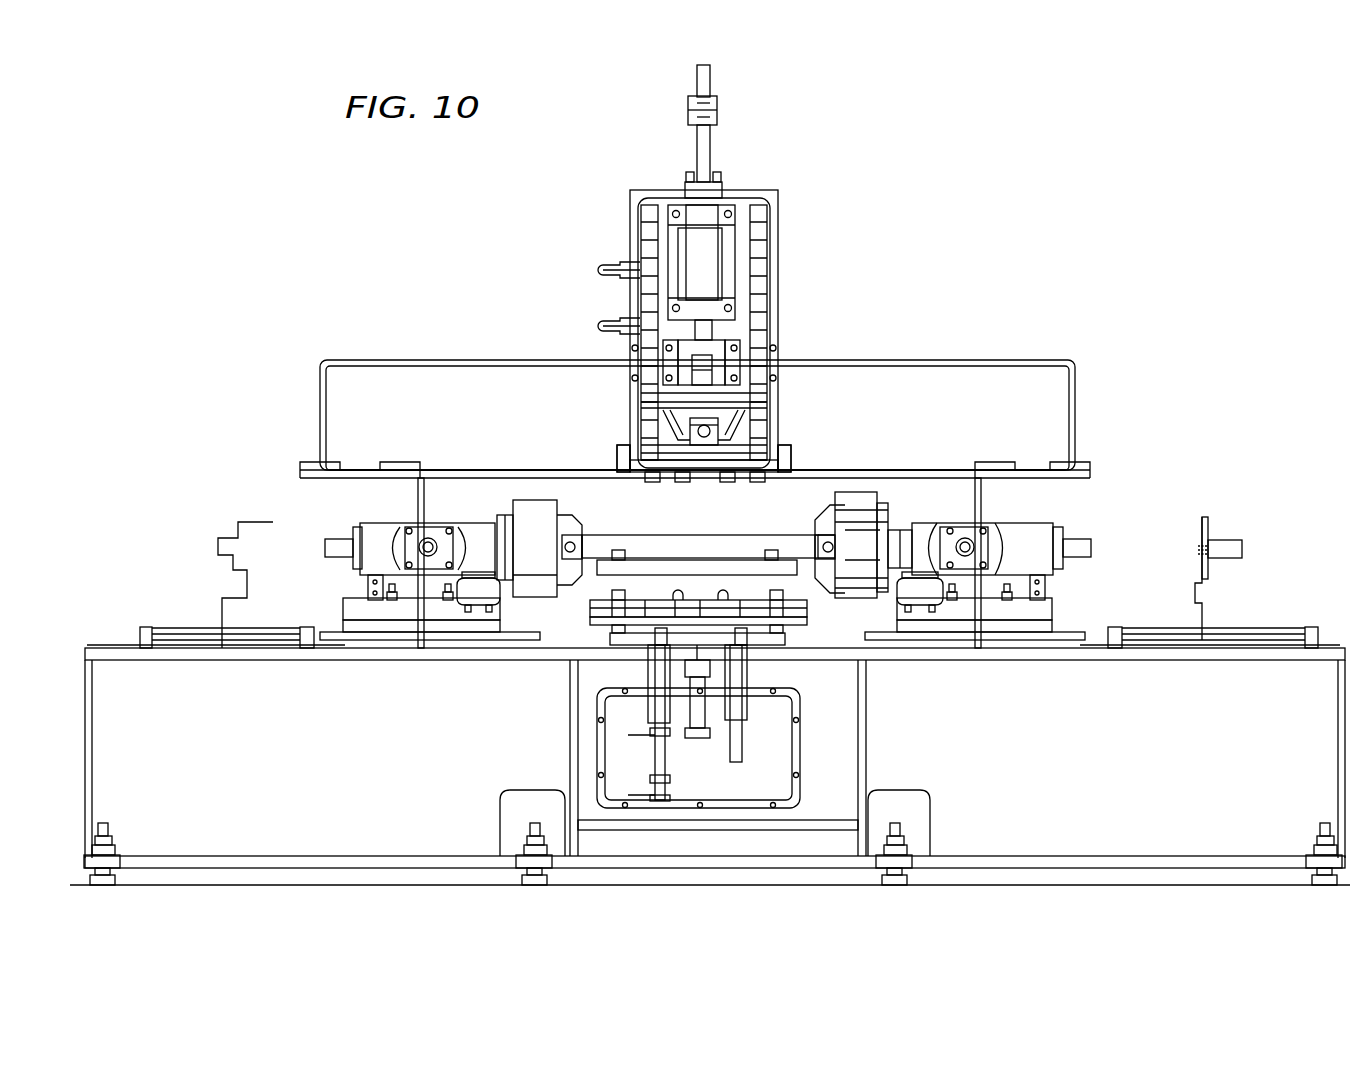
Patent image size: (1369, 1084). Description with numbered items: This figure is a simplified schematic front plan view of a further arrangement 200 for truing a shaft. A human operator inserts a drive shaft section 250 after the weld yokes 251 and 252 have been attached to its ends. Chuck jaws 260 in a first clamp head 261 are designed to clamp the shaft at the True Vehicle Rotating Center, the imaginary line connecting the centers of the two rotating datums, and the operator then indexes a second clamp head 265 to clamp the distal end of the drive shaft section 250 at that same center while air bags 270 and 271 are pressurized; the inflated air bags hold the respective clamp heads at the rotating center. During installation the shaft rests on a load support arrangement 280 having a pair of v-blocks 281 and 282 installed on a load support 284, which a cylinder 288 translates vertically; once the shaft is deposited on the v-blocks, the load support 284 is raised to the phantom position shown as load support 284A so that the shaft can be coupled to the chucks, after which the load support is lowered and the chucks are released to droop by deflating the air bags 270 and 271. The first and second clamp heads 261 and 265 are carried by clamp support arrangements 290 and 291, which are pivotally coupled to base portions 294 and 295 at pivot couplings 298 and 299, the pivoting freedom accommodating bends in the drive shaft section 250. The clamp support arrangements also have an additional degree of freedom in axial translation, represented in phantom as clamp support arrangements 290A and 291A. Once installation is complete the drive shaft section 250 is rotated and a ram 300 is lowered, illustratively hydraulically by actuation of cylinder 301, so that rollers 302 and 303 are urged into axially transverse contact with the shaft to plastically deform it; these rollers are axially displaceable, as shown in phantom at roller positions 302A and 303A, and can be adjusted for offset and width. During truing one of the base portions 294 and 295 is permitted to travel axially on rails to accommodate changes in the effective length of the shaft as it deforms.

The arrangement for truing a shaft 200 is at (714, 929).
The drive shaft section 250 is at (672, 548).
The weld yoke 251 is at (543, 482).
The weld yoke 252 is at (823, 478).
The chuck jaws 260 is at (820, 546).
The first clamp head 261 is at (862, 485).
The second clamp head 265 is at (528, 512).
The air bag 270 is at (905, 596).
The air bag 271 is at (486, 596).
The load support arrangement 280 is at (598, 679).
The v-block 281 is at (795, 650).
The v-block 282 is at (625, 600).
The load support 284 is at (598, 635).
The load support (raised position) 284A is at (608, 568).
The cylinder 288 is at (700, 720).
The clamp support arrangement 290 is at (1023, 523).
The clamp support arrangement (axially translated position) 290A is at (1185, 530).
The clamp support arrangement 291 is at (372, 524).
The clamp support arrangement (axially translated position) 291A is at (208, 545).
The base portion 294 is at (998, 618).
The base portion 295 is at (348, 619).
The pivot coupling 298 is at (960, 552).
The pivot coupling 299 is at (385, 595).
The ram 300 is at (760, 169).
The cylinder 301 is at (707, 229).
The roller 302 is at (663, 481).
The roller position 302A is at (618, 477).
The roller 303 is at (737, 480).
The roller position 303A is at (793, 477).